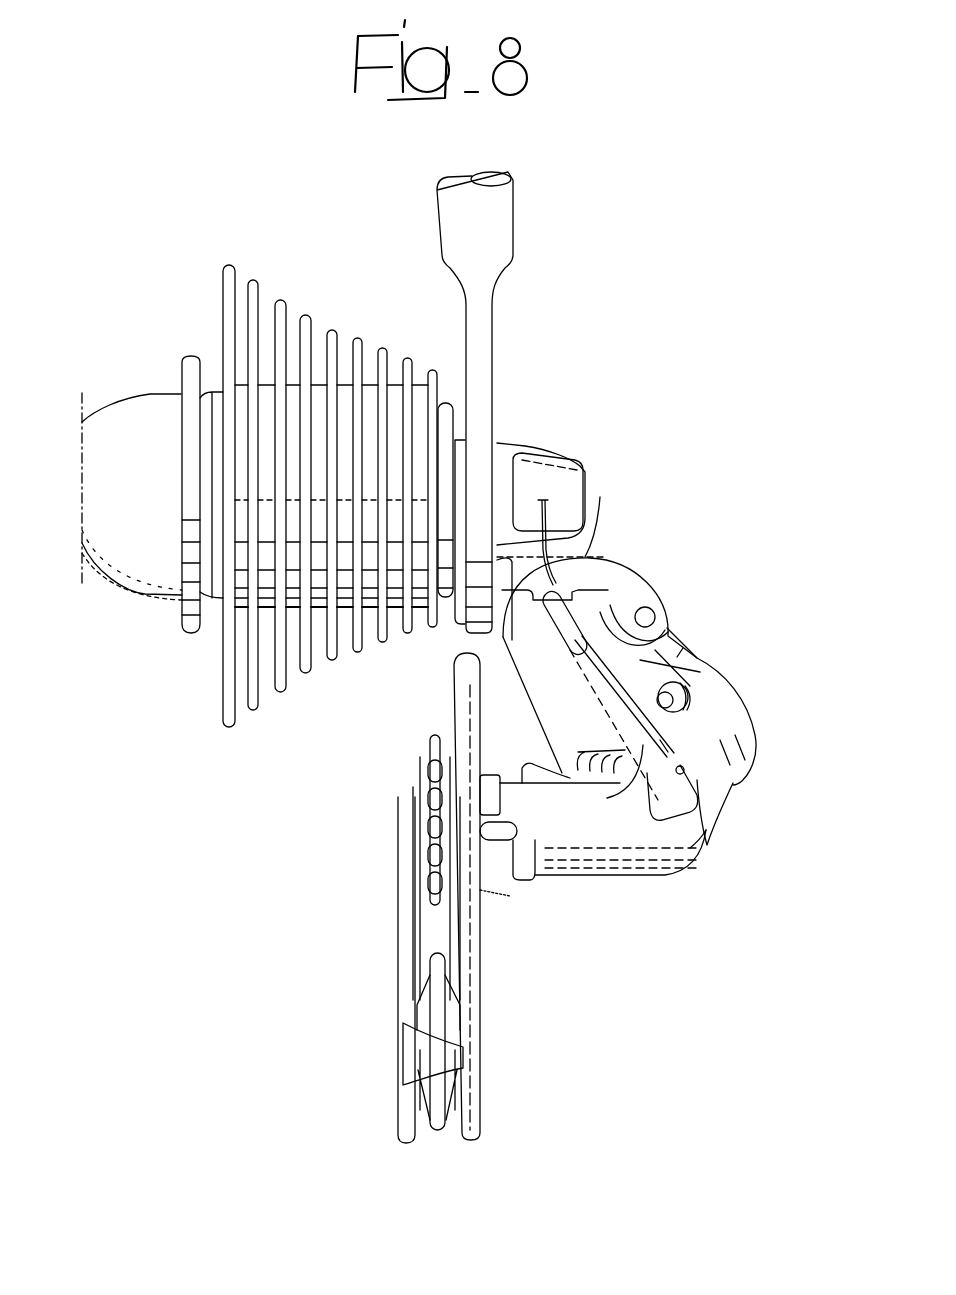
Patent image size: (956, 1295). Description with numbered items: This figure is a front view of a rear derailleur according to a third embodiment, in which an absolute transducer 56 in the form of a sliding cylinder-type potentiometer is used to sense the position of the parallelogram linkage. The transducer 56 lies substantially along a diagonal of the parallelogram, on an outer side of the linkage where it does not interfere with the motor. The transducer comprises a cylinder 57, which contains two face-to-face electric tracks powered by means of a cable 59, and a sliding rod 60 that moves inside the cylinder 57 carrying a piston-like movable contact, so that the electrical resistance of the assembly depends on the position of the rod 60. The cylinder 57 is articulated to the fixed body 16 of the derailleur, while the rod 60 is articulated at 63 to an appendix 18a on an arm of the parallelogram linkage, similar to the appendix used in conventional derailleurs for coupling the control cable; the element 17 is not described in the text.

The fixed body 16 is at (572, 572).
The movable member / plate 17 is at (578, 858).
The appendix 18a is at (733, 784).
The absolute transducer 56 is at (637, 658).
The cylinder 57 is at (602, 618).
The cable 59 is at (584, 530).
The sliding rod 60 is at (625, 712).
The articulation 63 is at (700, 850).